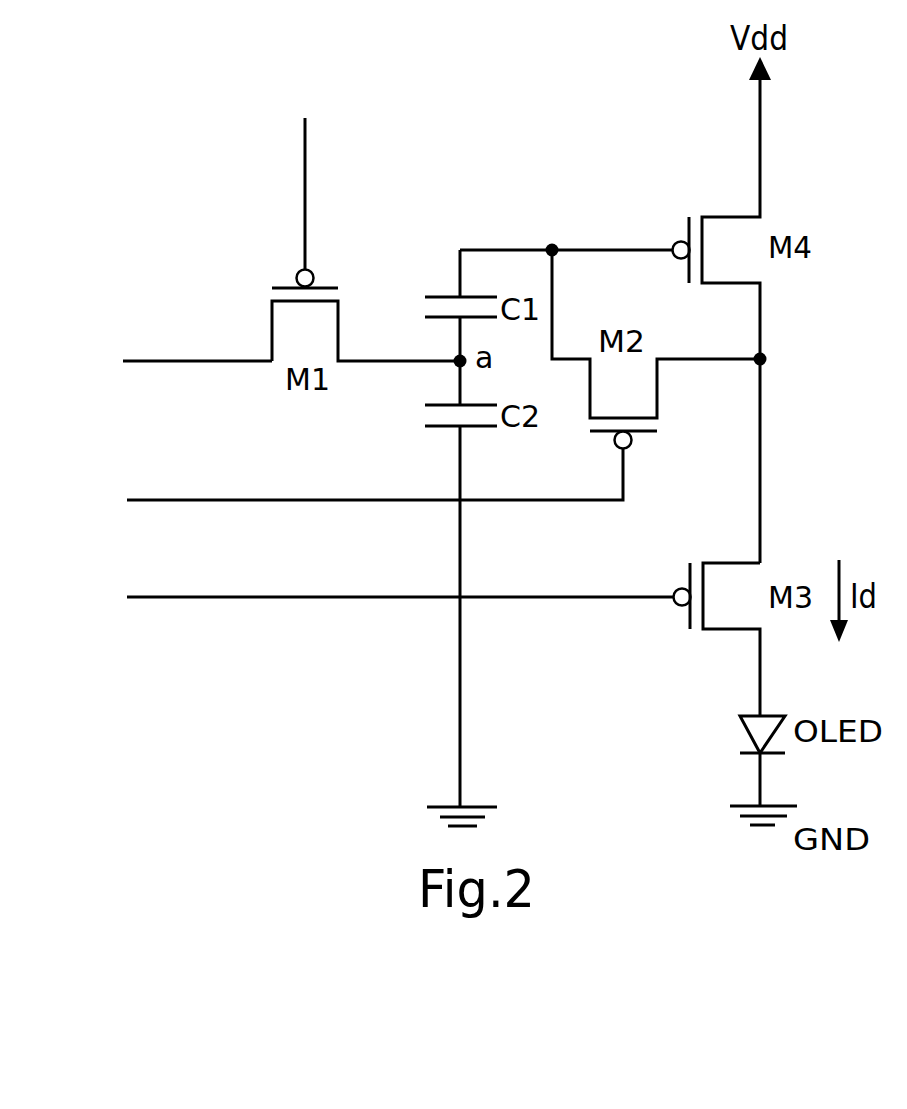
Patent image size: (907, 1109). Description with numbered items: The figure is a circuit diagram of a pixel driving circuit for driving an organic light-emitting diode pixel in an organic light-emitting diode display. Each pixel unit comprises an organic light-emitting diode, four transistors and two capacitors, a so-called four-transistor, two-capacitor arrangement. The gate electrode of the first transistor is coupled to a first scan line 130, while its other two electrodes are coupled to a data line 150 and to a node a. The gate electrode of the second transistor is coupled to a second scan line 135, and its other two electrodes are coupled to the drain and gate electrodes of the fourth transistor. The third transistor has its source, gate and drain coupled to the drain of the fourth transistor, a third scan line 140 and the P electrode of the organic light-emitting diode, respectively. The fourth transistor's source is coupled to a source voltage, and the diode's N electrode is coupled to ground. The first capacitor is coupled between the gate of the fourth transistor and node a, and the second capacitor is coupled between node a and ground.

The first scan line 130 is at (305, 168).
The data line 150 is at (167, 361).
The second scan line 135 is at (168, 500).
The third scan line 140 is at (168, 597).